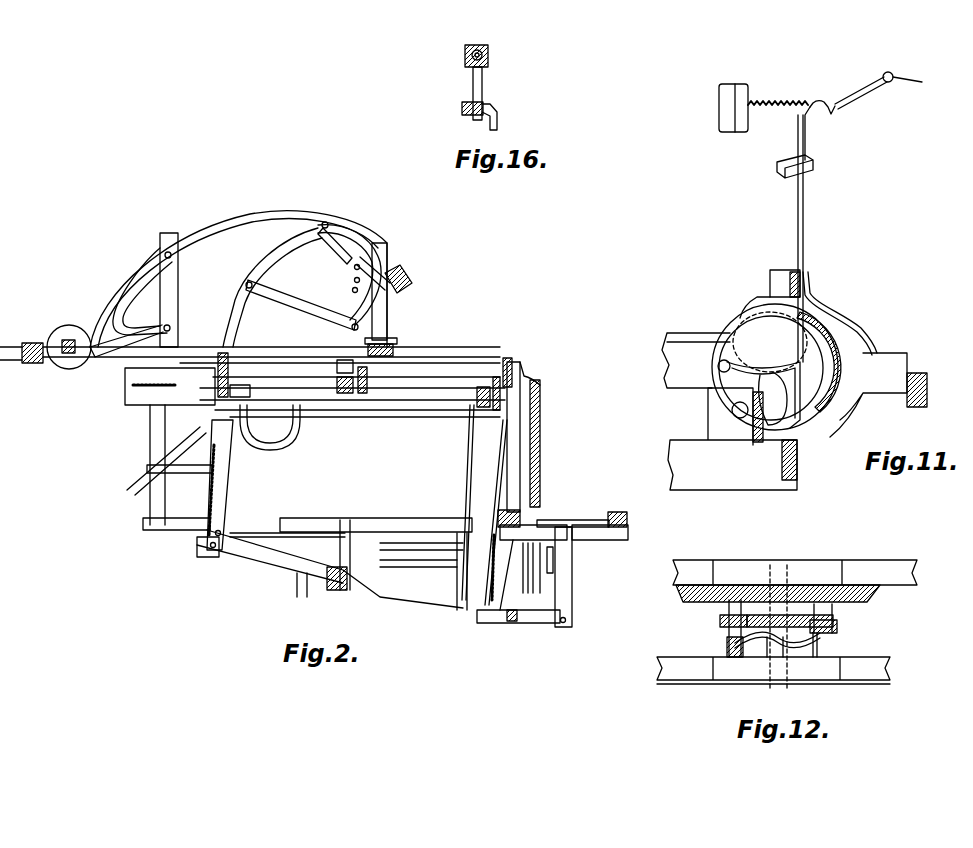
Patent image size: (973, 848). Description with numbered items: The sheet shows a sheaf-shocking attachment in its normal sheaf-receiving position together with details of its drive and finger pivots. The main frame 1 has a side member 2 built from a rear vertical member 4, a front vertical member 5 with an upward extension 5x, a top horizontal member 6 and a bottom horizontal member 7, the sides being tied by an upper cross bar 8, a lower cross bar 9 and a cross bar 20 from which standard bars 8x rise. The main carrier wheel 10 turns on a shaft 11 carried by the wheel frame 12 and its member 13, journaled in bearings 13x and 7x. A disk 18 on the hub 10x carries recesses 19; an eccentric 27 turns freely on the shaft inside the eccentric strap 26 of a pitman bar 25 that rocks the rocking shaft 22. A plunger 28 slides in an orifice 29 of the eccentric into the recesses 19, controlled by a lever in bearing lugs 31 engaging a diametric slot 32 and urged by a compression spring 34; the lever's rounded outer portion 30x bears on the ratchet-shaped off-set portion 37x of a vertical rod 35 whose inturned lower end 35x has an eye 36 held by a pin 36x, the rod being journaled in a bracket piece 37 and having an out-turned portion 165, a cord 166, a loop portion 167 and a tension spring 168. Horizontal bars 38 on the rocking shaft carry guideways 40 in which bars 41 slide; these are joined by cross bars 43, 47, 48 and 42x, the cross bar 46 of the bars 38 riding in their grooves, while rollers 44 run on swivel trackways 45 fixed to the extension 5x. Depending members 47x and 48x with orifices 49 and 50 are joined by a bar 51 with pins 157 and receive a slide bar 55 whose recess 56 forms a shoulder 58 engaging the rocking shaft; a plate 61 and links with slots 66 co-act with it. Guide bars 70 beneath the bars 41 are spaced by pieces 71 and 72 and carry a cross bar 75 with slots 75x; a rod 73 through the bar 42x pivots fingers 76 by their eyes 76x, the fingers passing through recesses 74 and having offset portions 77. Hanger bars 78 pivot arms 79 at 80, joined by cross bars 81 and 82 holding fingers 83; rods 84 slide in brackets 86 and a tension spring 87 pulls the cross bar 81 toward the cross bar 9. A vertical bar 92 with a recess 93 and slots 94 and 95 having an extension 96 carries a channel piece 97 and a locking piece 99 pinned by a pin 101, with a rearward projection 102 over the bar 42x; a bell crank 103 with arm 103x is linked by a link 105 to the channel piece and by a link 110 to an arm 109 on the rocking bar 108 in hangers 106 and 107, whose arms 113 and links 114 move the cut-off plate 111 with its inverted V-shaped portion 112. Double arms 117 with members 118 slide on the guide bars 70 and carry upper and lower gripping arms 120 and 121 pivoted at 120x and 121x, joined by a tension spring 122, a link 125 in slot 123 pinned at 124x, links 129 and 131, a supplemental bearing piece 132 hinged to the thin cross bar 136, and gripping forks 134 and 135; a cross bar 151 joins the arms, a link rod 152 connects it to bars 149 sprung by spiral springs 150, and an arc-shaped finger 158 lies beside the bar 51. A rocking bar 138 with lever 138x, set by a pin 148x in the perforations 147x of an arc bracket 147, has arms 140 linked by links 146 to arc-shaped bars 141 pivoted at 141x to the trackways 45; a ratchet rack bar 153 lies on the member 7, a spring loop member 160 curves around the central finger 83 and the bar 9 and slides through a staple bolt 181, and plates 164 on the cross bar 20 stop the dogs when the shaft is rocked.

In FIG. 2, the main frame 1 is at (150, 528).
In FIG. 2, the side member 2 is at (148, 520).
In FIG. 2, the rear vertical member 4 is at (158, 530).
In FIG. 2, the front vertical member 5 is at (507, 365).
In FIG. 2, the upward extension 5x is at (170, 232).
In FIG. 2, the top horizontal member 6 is at (495, 360).
In FIG. 2, the bottom horizontal member 7 is at (178, 535).
In FIG. 11, the bottom horizontal member 7 is at (690, 468).
In FIG. 11, the bearing 7x is at (712, 430).
In FIG. 12, the bearing 7x is at (727, 675).
In FIG. 2, the upper cross bar 8 is at (520, 362).
In FIG. 2, the standard bar 8x is at (382, 283).
In FIG. 11, the standard bar 8x is at (720, 108).
In FIG. 2, the lower cross bar 9 is at (530, 512).
In FIG. 11, the main carrier wheel 10 is at (685, 358).
In FIG. 11, the hub 10x is at (737, 318).
In FIG. 12, the hub 10x is at (810, 592).
In FIG. 11, the shaft 11 is at (810, 410).
In FIG. 12, the shaft 11 is at (780, 590).
In FIG. 11, the wheel frame 12 is at (915, 408).
In FIG. 12, the wheel frame 12 is at (877, 575).
In FIG. 11, the member 13 is at (917, 380).
In FIG. 12, the bearing 13x is at (740, 570).
In FIG. 11, the disk 18 is at (825, 395).
In FIG. 12, the disk 18 is at (837, 615).
In FIG. 11, the recesses 19 is at (750, 320).
In FIG. 12, the recesses 19 is at (725, 608).
In FIG. 2, the cross bar 20 is at (393, 348).
In FIG. 2, the rocking shaft 22 is at (340, 400).
In FIG. 11, the pitman bar 25 is at (812, 287).
In FIG. 11, the eccentric strap 26 is at (818, 345).
In FIG. 12, the eccentric strap 26 is at (838, 627).
In FIG. 11, the eccentric 27 is at (725, 325).
In FIG. 12, the eccentric 27 is at (770, 590).
In FIG. 11, the plunger 28 is at (765, 335).
In FIG. 12, the plunger 28 is at (725, 637).
In FIG. 11, the orifice 29 is at (790, 345).
In FIG. 12, the orifice 29 is at (720, 622).
In FIG. 11, the rounded outer portion 30x is at (838, 375).
In FIG. 12, the rounded outer portion 30x is at (827, 645).
In FIG. 11, the bearing lugs 31 is at (723, 410).
In FIG. 12, the bearing lugs 31 is at (780, 684).
In FIG. 11, the diametric slot 32 is at (720, 362).
In FIG. 12, the diametric slot 32 is at (722, 650).
In FIG. 11, the compression spring 34 is at (835, 360).
In FIG. 12, the compression spring 34 is at (838, 636).
In FIG. 11, the vertical rod 35 is at (808, 220).
In FIG. 12, the vertical rod 35 is at (828, 645).
In FIG. 11, the inturned lower end 35x is at (805, 440).
In FIG. 11, the eye 36 is at (768, 435).
In FIG. 12, the eye 36 is at (818, 684).
In FIG. 11, the pin 36x is at (752, 430).
In FIG. 11, the bracket piece 37 is at (813, 165).
In FIG. 11, the off-set portion 37x is at (848, 400).
In FIG. 12, the off-set portion 37x is at (804, 670).
In FIG. 2, the horizontal bar 38 is at (135, 372).
In FIG. 2, the guideways 40 is at (343, 360).
In FIG. 2, the horizontal bar 41 is at (128, 342).
In FIG. 2, the cross bar 42x is at (476, 395).
In FIG. 16, the cross bar 42x is at (488, 54).
In FIG. 2, the cross bar 43 is at (62, 330).
In FIG. 2, the roller 44 is at (62, 340).
In FIG. 2, the swivel track way 45 is at (352, 226).
In FIG. 2, the cross bar 46 is at (483, 357).
In FIG. 2, the cross bar 47 is at (240, 375).
In FIG. 2, the depending member 47x is at (220, 352).
In FIG. 2, the cross bar 48 is at (395, 366).
In FIG. 2, the depending member 48x is at (456, 350).
In FIG. 2, the orifice 49 is at (215, 372).
In FIG. 2, the orifice 50 is at (362, 420).
In FIG. 2, the bar 51 is at (255, 350).
In FIG. 2, the slide bar 55 is at (440, 400).
In FIG. 2, the longitudinal recess 56 is at (280, 390).
In FIG. 2, the shoulder 58 is at (358, 470).
In FIG. 2, the plate 61 is at (350, 430).
In FIG. 2, the longitudinal slot 66 is at (543, 410).
In FIG. 2, the guide bar 70 is at (130, 405).
In FIG. 2, the spacing pieces 71 is at (150, 390).
In FIG. 2, the spacing pieces 72 is at (470, 410).
In FIG. 2, the rod 73 is at (480, 407).
In FIG. 16, the recesses 74 is at (470, 65).
In FIG. 2, the cross bar 75 is at (495, 425).
In FIG. 16, the cross bar 75 is at (485, 108).
In FIG. 16, the slots 75x is at (468, 112).
In FIG. 2, the fingers 76 is at (475, 495).
In FIG. 16, the fingers 76 is at (483, 88).
In FIG. 16, the eyes 76x is at (466, 56).
In FIG. 2, the forwardly offset portions 77 is at (545, 420).
In FIG. 16, the forwardly offset portions 77 is at (498, 120).
In FIG. 2, the hanger bars 78 is at (572, 600).
In FIG. 2, the arms 79 is at (540, 622).
In FIG. 2, the pivot 80 is at (572, 618).
In FIG. 2, the cross bar 81 is at (490, 612).
In FIG. 2, the cross bar 82 is at (510, 620).
In FIG. 2, the fingers 83 is at (395, 590).
In FIG. 2, the rods 84 is at (500, 440).
In FIG. 2, the lugs or brackets 86 is at (525, 495).
In FIG. 2, the tension spring 87 is at (465, 600).
In FIG. 2, the vertical bar 92 is at (525, 380).
In FIG. 2, the recess 93 is at (540, 437).
In FIG. 2, the vertical slot 94 is at (545, 392).
In FIG. 2, the vertical slot 95 is at (538, 468).
In FIG. 2, the rearward horizontal extension 96 is at (540, 450).
In FIG. 2, the channel piece 97 is at (550, 398).
In FIG. 2, the locking piece 99 is at (535, 370).
In FIG. 2, the pin 101 is at (558, 393).
In FIG. 2, the rearward projection 102 is at (527, 372).
In FIG. 2, the bell crank 103 is at (600, 517).
In FIG. 2, the upwardly extending arm 103x is at (540, 502).
In FIG. 2, the link 105 is at (545, 490).
In FIG. 2, the hanger 106 is at (560, 555).
In FIG. 2, the hanger 107 is at (232, 555).
In FIG. 2, the rocking bar 108 is at (408, 560).
In FIG. 2, the arm 109 is at (555, 580).
In FIG. 2, the link 110 is at (595, 567).
In FIG. 2, the cut-off plate 111 is at (282, 508).
In FIG. 2, the inverted V-shape portion 112 is at (382, 505).
In FIG. 2, the arms 113 is at (292, 595).
In FIG. 2, the links 114 is at (300, 575).
In FIG. 2, the double arms 117 is at (205, 555).
In FIG. 2, the member 118 is at (225, 505).
In FIG. 2, the main upper gripping arm 120 is at (322, 487).
In FIG. 2, the pivot 120x is at (187, 438).
In FIG. 2, the lower main gripping arm 121 is at (225, 565).
In FIG. 2, the pivot 121x is at (208, 560).
In FIG. 2, the tension spring 122 is at (200, 548).
In FIG. 2, the slot 123 is at (213, 420).
In FIG. 2, the pin 124x is at (233, 560).
In FIG. 2, the link 125 is at (157, 467).
In FIG. 2, the link 129 is at (322, 503).
In FIG. 2, the link 131 is at (340, 585).
In FIG. 2, the supplemental bearing piece 132 is at (298, 380).
In FIG. 2, the upper gripping fork 134 is at (362, 525).
In FIG. 2, the lower gripping fork 135 is at (345, 590).
In FIG. 2, the thin cross bar 136 is at (283, 400).
In FIG. 2, the rocking bar 138 is at (412, 290).
In FIG. 2, the lever 138x is at (340, 243).
In FIG. 2, the arms 140 is at (410, 280).
In FIG. 2, the arc-shaped bar 141 is at (272, 262).
In FIG. 2, the pivot 141x is at (325, 222).
In FIG. 2, the link 146 is at (284, 290).
In FIG. 2, the arc bracket 147 is at (398, 263).
In FIG. 2, the perforations 147x is at (380, 248).
In FIG. 2, the pin 148x is at (353, 272).
In FIG. 2, the bars 149 is at (101, 505).
In FIG. 2, the spiral spring 150 is at (187, 433).
In FIG. 2, the cross bar 151 is at (235, 478).
In FIG. 2, the link rod 152 is at (189, 487).
In FIG. 2, the ratchet rack bar 153 is at (212, 560).
In FIG. 2, the pins 157 is at (295, 395).
In FIG. 2, the arc-shape finger 158 is at (245, 430).
In FIG. 2, the loop member 160 is at (505, 600).
In FIG. 2, the plates 164 is at (395, 338).
In FIG. 11, the out-turned portion 165 is at (860, 95).
In FIG. 11, the cord 166 is at (910, 90).
In FIG. 11, the loop portion 167 is at (832, 115).
In FIG. 11, the tension spring 168 is at (775, 103).
In FIG. 2, the bar 181 is at (542, 535).